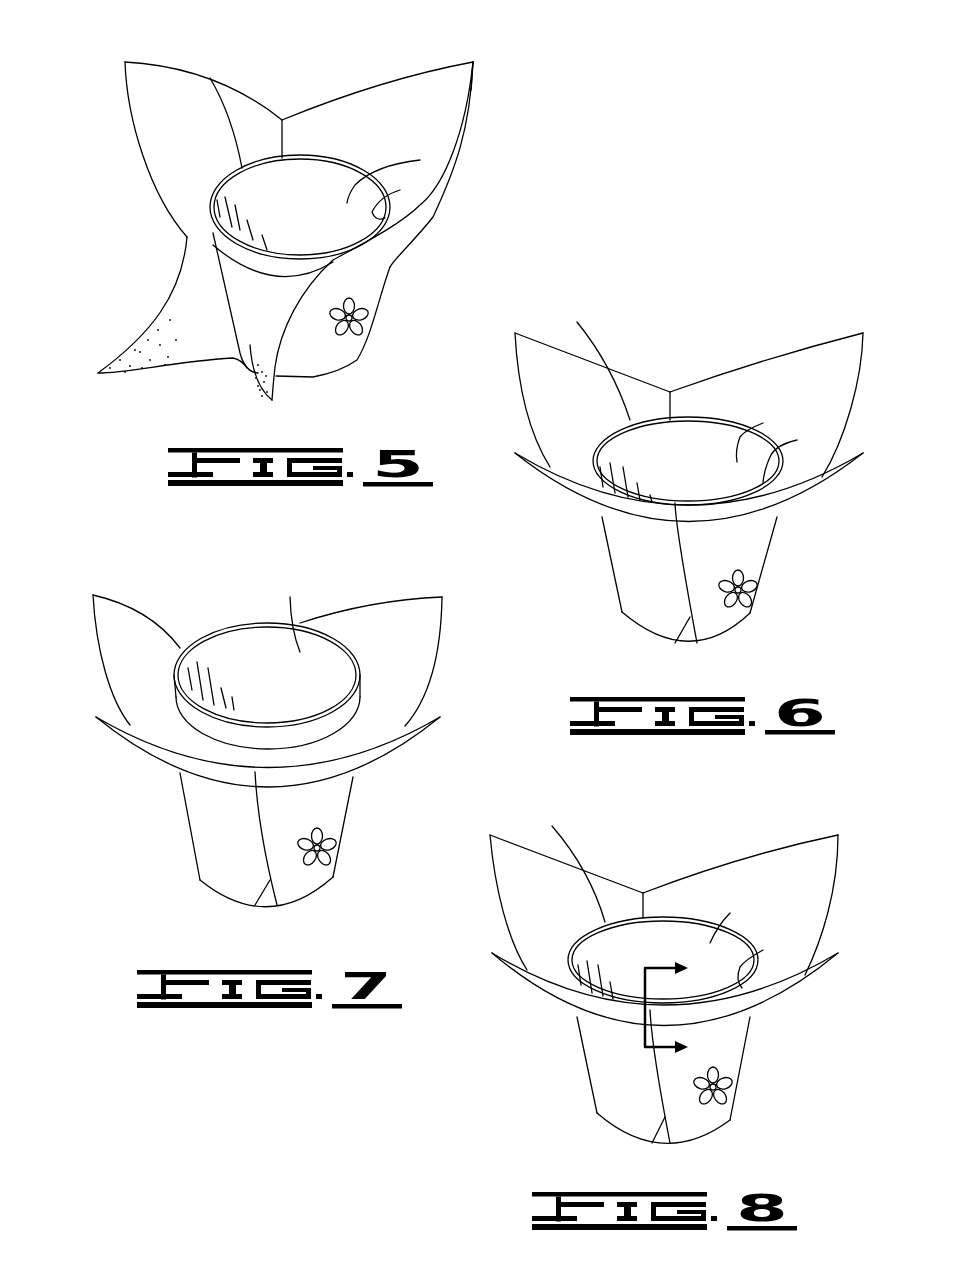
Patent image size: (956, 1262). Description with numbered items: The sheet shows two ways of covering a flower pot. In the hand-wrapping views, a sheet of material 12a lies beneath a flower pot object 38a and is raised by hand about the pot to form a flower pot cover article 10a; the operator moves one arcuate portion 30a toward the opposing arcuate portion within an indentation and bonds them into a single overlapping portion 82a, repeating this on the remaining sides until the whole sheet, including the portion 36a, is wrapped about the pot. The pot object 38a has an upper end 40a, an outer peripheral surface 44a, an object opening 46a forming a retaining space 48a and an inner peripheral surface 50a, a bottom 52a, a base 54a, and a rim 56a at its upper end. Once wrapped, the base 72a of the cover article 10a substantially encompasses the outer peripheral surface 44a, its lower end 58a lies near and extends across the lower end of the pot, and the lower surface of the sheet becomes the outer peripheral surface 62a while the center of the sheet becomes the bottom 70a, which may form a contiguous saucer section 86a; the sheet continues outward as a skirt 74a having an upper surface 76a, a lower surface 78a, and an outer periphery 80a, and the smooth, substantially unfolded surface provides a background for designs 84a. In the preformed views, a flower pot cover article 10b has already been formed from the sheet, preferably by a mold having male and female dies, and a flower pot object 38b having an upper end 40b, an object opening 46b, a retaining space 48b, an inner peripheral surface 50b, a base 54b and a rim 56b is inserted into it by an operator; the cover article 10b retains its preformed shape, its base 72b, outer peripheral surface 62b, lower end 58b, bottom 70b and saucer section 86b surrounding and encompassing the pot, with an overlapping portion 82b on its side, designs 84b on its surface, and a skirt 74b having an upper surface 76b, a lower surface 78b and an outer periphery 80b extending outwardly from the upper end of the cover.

In FIG. 5, the flower pot cover article 10a is at (316, 57).
In FIG. 6, the flower pot cover article 10a is at (721, 300).
In FIG. 7, the flower pot cover article 10b is at (153, 573).
In FIG. 8, the flower pot cover article 10b is at (695, 803).
In FIG. 5, the sheet of material 12a is at (478, 70).
In FIG. 5, the arcuate portion 30a is at (174, 366).
In FIG. 5, the tab portion 36a is at (128, 360).
In FIG. 5, the flower pot object 38a is at (250, 317).
In FIG. 6, the flower pot object 38a is at (719, 415).
In FIG. 7, the flower pot object 38b is at (213, 733).
In FIG. 8, the flower pot object 38b is at (691, 913).
In FIG. 5, the upper end 40a is at (210, 78).
In FIG. 6, the upper end 40a is at (577, 322).
In FIG. 7, the upper end 40b is at (300, 623).
In FIG. 8, the upper end 40b is at (552, 826).
In FIG. 5, the outer peripheral surface 44a is at (230, 278).
In FIG. 5, the object opening 46a is at (420, 160).
In FIG. 6, the object opening 46a is at (763, 423).
In FIG. 7, the object opening 46b is at (290, 597).
In FIG. 8, the object opening 46b is at (730, 913).
In FIG. 5, the retaining space 48a is at (238, 195).
In FIG. 6, the retaining space 48a is at (627, 467).
In FIG. 7, the retaining space 48b is at (262, 660).
In FIG. 8, the retaining space 48b is at (603, 967).
In FIG. 5, the inner peripheral surface 50a is at (400, 190).
In FIG. 6, the inner peripheral surface 50a is at (797, 440).
In FIG. 7, the inner peripheral surface 50b is at (203, 668).
In FIG. 8, the inner peripheral surface 50b is at (763, 950).
In FIG. 5, the bottom 52a is at (245, 372).
In FIG. 5, the base 54a is at (245, 300).
In FIG. 7, the base 54b is at (350, 757).
In FIG. 5, the rim 56a is at (211, 242).
In FIG. 7, the rim 56b is at (177, 708).
In FIG. 5, the lower end 58a is at (345, 372).
In FIG. 6, the lower end 58a is at (735, 637).
In FIG. 7, the lower end 58b is at (315, 898).
In FIG. 8, the lower end 58b is at (710, 1135).
In FIG. 5, the outer peripheral surface 62a is at (365, 281).
In FIG. 6, the outer peripheral surface 62a is at (757, 549).
In FIG. 7, the outer peripheral surface 62b is at (333, 810).
In FIG. 8, the outer peripheral surface 62b is at (732, 1050).
In FIG. 6, the bottom 70a is at (713, 647).
In FIG. 7, the bottom 70b is at (293, 907).
In FIG. 8, the bottom 70b is at (688, 1147).
In FIG. 6, the base 72a is at (630, 557).
In FIG. 7, the base 72b is at (210, 817).
In FIG. 8, the base 72b is at (607, 1055).
In FIG. 5, the skirt 74a is at (445, 120).
In FIG. 6, the skirt 74a is at (555, 408).
In FIG. 7, the skirt 74b is at (410, 633).
In FIG. 8, the skirt 74b is at (523, 898).
In FIG. 5, the upper surface 76a is at (430, 75).
In FIG. 6, the upper surface 76a is at (817, 347).
In FIG. 7, the upper surface 76b is at (407, 660).
In FIG. 8, the upper surface 76b is at (812, 863).
In FIG. 6, the lower surface 78a is at (583, 500).
In FIG. 7, the lower surface 78b is at (417, 740).
In FIG. 8, the lower surface 78b is at (557, 1000).
In FIG. 5, the outer periphery 80a is at (125, 64).
In FIG. 6, the outer periphery 80a is at (516, 363).
In FIG. 7, the outer periphery 80b is at (398, 602).
In FIG. 8, the outer periphery 80b is at (793, 840).
In FIG. 5, the overlapping portion 82a is at (280, 124).
In FIG. 6, the overlapping portion 82a is at (668, 398).
In FIG. 7, the overlapping portion 82b is at (248, 775).
In FIG. 8, the overlapping portion 82b is at (643, 900).
In FIG. 5, the designs 84a is at (362, 323).
In FIG. 6, the designs 84a is at (752, 595).
In FIG. 7, the designs 84b is at (332, 855).
In FIG. 8, the designs 84b is at (725, 1095).
In FIG. 6, the saucer section 86a is at (668, 610).
In FIG. 7, the saucer section 86b is at (248, 873).
In FIG. 8, the saucer section 86b is at (643, 1110).